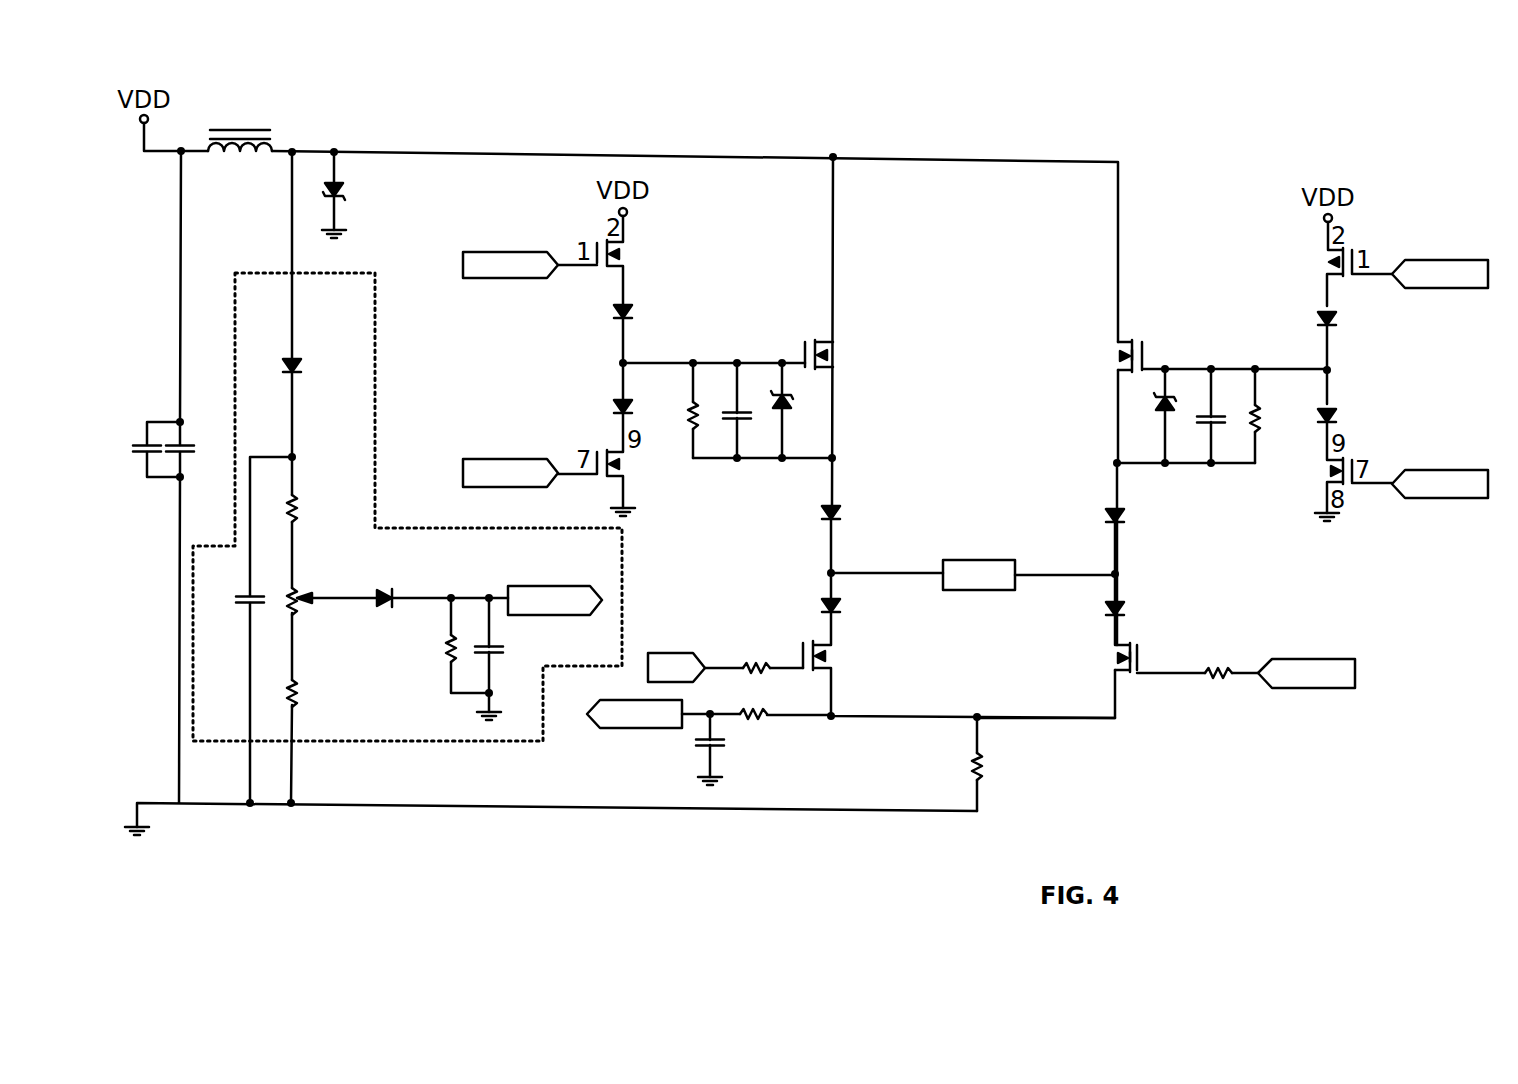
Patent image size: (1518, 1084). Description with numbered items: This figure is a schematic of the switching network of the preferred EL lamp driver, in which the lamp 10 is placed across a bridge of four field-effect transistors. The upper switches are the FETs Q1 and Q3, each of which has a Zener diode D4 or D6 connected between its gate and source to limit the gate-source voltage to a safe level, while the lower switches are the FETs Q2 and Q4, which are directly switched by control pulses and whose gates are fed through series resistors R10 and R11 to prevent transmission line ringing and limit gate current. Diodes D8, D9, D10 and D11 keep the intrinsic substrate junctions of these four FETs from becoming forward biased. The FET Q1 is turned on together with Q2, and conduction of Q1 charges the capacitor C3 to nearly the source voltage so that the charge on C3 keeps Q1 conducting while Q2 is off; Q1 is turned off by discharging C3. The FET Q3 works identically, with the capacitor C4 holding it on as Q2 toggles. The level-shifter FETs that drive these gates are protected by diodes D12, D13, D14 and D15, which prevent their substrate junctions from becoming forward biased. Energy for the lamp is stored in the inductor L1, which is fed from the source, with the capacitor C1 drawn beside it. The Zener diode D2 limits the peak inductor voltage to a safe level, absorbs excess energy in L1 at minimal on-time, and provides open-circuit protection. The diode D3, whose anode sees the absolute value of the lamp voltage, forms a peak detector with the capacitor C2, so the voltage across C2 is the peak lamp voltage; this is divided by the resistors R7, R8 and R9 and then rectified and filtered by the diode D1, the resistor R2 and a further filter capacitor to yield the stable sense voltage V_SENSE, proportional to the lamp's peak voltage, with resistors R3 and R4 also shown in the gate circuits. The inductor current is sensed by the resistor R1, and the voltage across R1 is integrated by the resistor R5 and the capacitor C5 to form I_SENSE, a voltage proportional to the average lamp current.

The electroluminescent lamp (EL) 10 is at (974, 554).
The inductor L1 is at (240, 125).
The capacitor C1 is at (141, 449).
The capacitor C2 is at (233, 600).
The capacitor C3 is at (752, 420).
The capacitor C4 is at (1216, 424).
The capacitor C5 is at (696, 743).
The diode D1 is at (383, 590).
The Zener diode D2 is at (354, 195).
The diode D3 is at (303, 368).
The Zener diode D4 is at (796, 410).
The Zener diode D6 is at (1156, 400).
The diode D8 is at (818, 515).
The diode D9 is at (818, 608).
The diode D10 is at (1100, 517).
The diode D11 is at (1100, 610).
The diode D12 is at (650, 314).
The diode D13 is at (610, 409).
The diode D14 is at (1340, 322).
The diode D15 is at (1340, 419).
The resistor R1 is at (996, 764).
The resistor R2 is at (443, 640).
The resistor R3 is at (676, 410).
The resistor R4 is at (1274, 416).
The resistor R5 is at (745, 728).
The resistor R7 is at (300, 610).
The resistor R8 is at (300, 505).
The resistor R9 is at (300, 690).
The resistor R10 is at (755, 662).
The resistor R11 is at (1230, 658).
The field-effect transistor Q1 is at (839, 354).
The field-effect transistor Q2 is at (836, 656).
The field-effect transistor Q3 is at (1104, 354).
The field-effect transistor Q4 is at (1103, 658).